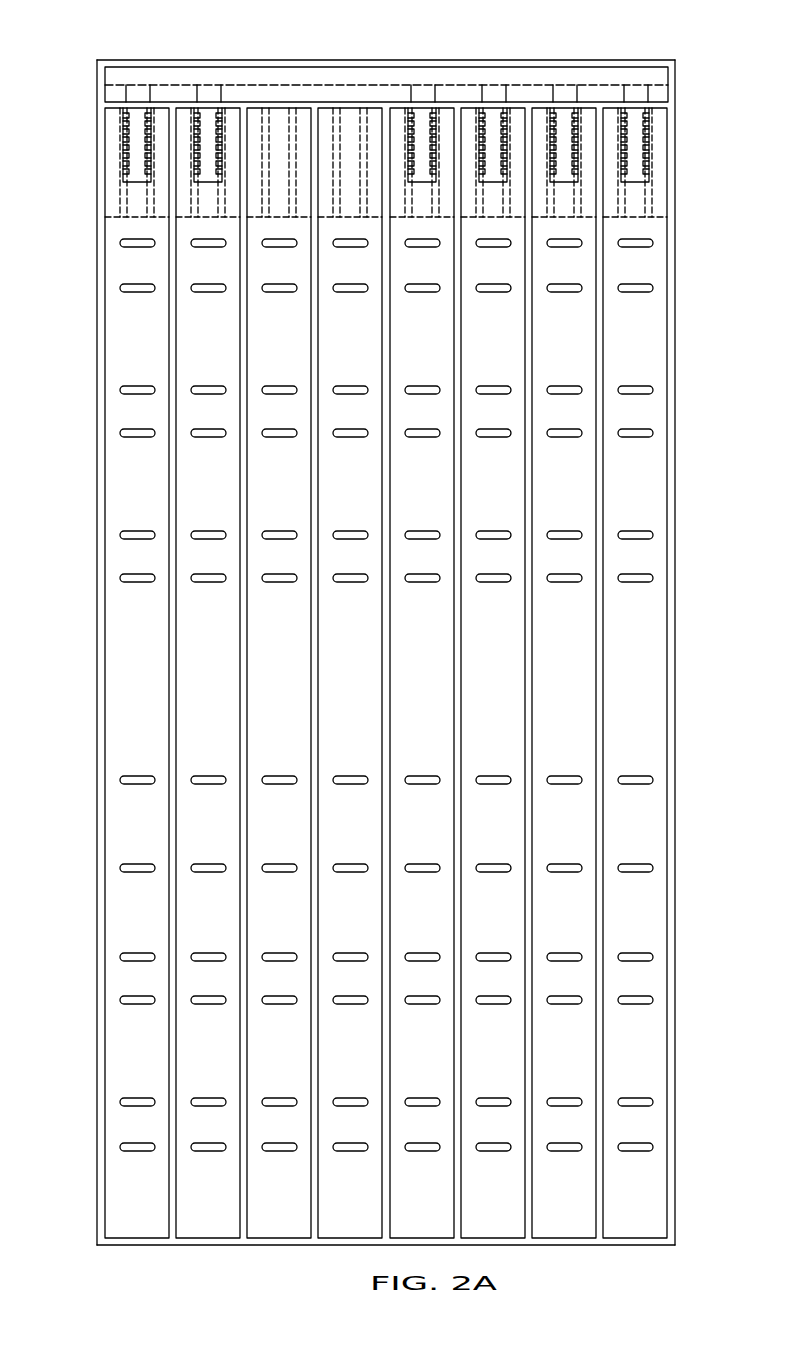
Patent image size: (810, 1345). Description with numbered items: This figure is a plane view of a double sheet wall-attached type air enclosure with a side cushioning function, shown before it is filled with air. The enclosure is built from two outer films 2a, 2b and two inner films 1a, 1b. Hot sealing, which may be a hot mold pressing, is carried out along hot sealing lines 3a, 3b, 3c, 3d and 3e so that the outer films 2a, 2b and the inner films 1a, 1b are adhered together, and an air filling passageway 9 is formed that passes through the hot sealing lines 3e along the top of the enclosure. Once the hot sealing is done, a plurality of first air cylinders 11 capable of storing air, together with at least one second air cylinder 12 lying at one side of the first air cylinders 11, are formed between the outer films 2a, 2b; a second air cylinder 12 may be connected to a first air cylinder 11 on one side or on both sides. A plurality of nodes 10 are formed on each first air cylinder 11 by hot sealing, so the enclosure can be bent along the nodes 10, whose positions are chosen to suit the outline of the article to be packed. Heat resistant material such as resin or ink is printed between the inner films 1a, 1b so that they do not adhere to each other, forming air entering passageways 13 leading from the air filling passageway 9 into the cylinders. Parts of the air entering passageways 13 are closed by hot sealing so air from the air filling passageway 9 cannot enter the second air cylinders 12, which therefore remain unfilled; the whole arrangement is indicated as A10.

The inner film 1a is at (125, 150).
The inner film 1b is at (162, 188).
The outer film 2a is at (663, 143).
The outer film 2b is at (650, 498).
The hot sealing line 3a is at (669, 64).
The hot sealing line 3b is at (632, 1243).
The hot sealing line 3c is at (100, 773).
The hot sealing line 3d is at (672, 907).
The hot sealing lines 3e is at (385, 1195).
The air filling passageway 9 is at (483, 78).
The nodes 10 is at (636, 430).
The first air cylinder 11 is at (582, 728).
The second air cylinder 12 is at (350, 482).
The air entering passageway 13 is at (643, 200).
The module assembly A10 is at (700, 247).